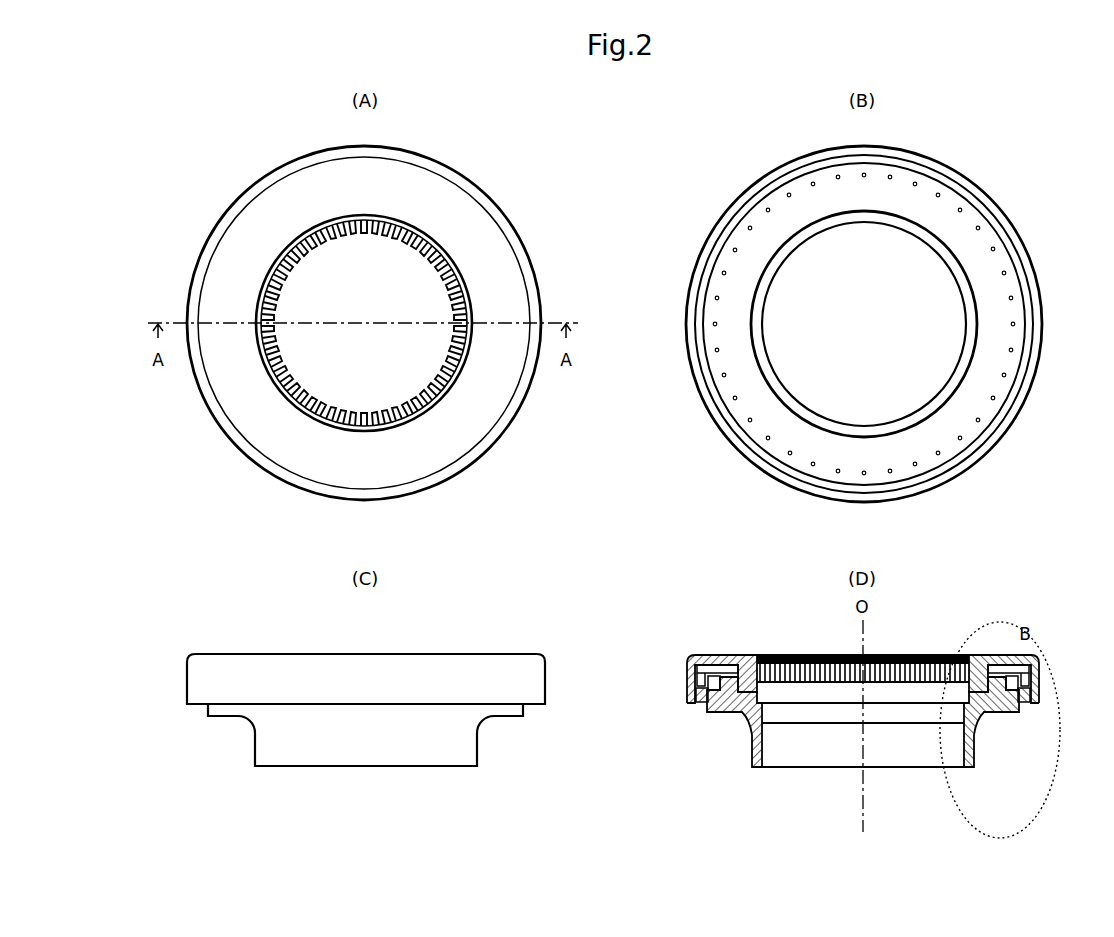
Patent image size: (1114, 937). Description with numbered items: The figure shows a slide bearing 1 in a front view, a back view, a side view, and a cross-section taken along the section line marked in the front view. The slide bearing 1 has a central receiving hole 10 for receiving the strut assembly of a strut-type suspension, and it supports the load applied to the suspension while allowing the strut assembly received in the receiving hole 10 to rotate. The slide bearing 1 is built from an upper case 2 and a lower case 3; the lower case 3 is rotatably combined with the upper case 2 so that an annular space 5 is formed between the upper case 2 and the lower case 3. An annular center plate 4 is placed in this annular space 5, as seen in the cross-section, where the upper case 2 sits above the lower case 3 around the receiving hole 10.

The slide bearing 1 is at (537, 133).
The upper case 2 is at (388, 192).
The lower case 3 is at (918, 223).
The annular center plate 4 is at (703, 656).
The annular space 5 is at (700, 666).
The receiving hole 10 is at (338, 291).